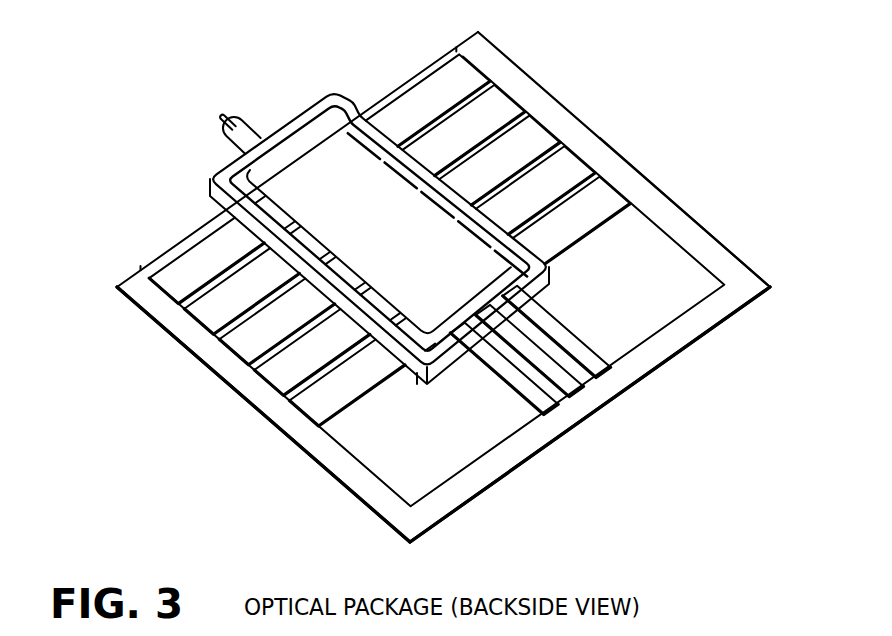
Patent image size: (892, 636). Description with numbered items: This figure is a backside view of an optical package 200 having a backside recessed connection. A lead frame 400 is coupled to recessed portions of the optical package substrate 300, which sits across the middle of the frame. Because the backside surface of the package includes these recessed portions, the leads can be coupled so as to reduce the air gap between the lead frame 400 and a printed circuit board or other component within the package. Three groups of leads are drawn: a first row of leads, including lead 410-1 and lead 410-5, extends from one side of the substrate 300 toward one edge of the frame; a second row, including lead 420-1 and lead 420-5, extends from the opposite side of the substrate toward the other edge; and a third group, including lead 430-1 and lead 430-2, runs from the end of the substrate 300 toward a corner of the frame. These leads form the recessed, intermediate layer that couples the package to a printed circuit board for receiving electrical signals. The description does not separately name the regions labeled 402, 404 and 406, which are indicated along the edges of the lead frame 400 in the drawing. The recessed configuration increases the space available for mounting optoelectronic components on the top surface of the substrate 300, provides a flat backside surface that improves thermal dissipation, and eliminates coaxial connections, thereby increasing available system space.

The optical package 200 is at (443, 314).
The optical package substrate 300 is at (331, 91).
The lead frame 400 is at (565, 106).
The substrate side edge 402 is at (695, 232).
The substrate side edge 404 is at (218, 363).
The substrate side edge 406 is at (621, 382).
The lead 410-1 is at (562, 206).
The lead 410-5 is at (437, 68).
The lead 420-1 is at (347, 377).
The lead 420-5 is at (189, 241).
The lead 430-1 is at (582, 353).
The lead 430-2 is at (498, 399).